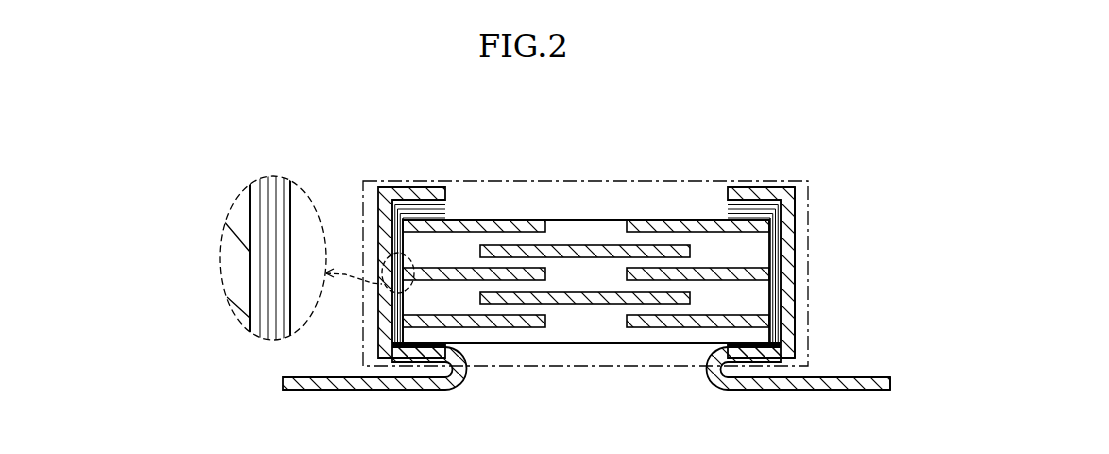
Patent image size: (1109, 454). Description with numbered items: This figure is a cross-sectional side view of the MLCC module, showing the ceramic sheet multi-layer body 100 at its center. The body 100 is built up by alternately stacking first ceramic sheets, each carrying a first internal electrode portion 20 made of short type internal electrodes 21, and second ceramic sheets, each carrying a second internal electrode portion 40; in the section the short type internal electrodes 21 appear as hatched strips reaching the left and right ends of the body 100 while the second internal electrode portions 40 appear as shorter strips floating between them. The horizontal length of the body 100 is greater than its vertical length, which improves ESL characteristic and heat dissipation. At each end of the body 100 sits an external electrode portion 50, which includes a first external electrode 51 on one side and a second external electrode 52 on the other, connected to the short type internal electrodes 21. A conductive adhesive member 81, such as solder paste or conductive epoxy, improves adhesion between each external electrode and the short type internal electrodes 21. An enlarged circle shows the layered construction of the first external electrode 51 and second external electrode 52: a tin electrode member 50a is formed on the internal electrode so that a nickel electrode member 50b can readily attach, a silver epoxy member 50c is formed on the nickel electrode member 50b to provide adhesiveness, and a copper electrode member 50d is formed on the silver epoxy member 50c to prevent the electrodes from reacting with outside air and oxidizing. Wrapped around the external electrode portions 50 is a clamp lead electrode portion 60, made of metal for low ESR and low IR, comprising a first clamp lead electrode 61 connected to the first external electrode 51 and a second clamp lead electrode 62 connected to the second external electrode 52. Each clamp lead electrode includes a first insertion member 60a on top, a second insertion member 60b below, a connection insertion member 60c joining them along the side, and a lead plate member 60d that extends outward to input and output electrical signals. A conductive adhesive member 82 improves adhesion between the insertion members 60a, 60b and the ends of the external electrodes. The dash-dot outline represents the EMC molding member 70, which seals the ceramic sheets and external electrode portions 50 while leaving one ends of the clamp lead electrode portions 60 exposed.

The ceramic sheet multi-layer body 100 is at (586, 308).
The first internal electrode portion 20 is at (586, 293).
The short type internal electrode 21 is at (545, 222).
The second internal electrode portion 40 is at (690, 250).
The external electrode portion 50 is at (453, 228).
The first external electrode 51 is at (377, 247).
The second external electrode 52 is at (728, 212).
The tin (Sn) electrode member 50a is at (287, 202).
The nickel (Ni) electrode member 50b is at (275, 223).
The silver (Ag) epoxy member 50c is at (265, 245).
The copper (Cu) electrode member 50d is at (257, 268).
The clamp lead electrode portion 60 is at (525, 199).
The first clamp lead electrode 61 is at (449, 181).
The second clamp lead electrode 62 is at (756, 177).
The first insertion member 60a is at (772, 186).
The second insertion member 60b is at (787, 352).
The connection insertion member 60c is at (792, 260).
The lead plate member 60d is at (883, 376).
The EMC molding member 70 is at (522, 368).
The conductive adhesive member 81 is at (403, 218).
The conductive adhesive member 82 is at (393, 200).